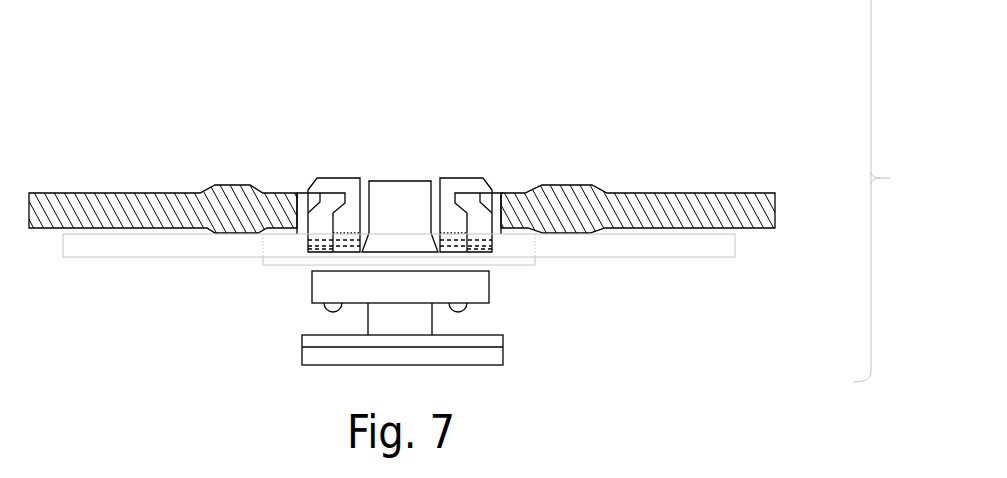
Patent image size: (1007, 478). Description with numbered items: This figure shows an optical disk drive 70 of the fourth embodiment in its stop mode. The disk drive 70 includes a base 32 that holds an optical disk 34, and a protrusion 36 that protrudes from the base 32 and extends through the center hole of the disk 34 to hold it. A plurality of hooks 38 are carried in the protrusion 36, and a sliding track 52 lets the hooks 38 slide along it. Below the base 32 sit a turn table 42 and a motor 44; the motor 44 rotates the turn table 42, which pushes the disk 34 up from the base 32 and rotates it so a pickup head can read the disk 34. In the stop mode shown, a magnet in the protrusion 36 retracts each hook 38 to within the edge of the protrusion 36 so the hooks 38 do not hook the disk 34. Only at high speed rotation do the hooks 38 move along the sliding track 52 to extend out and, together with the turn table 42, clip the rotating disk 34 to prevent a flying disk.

The optical disk drive 70 is at (893, 191).
The optical disk 34 is at (733, 143).
The protrusion 36 is at (322, 118).
The hooks 38 is at (315, 180).
The sliding track 52 is at (320, 246).
The base 32 is at (723, 248).
The turn table 42 is at (480, 288).
The motor 44 is at (503, 350).